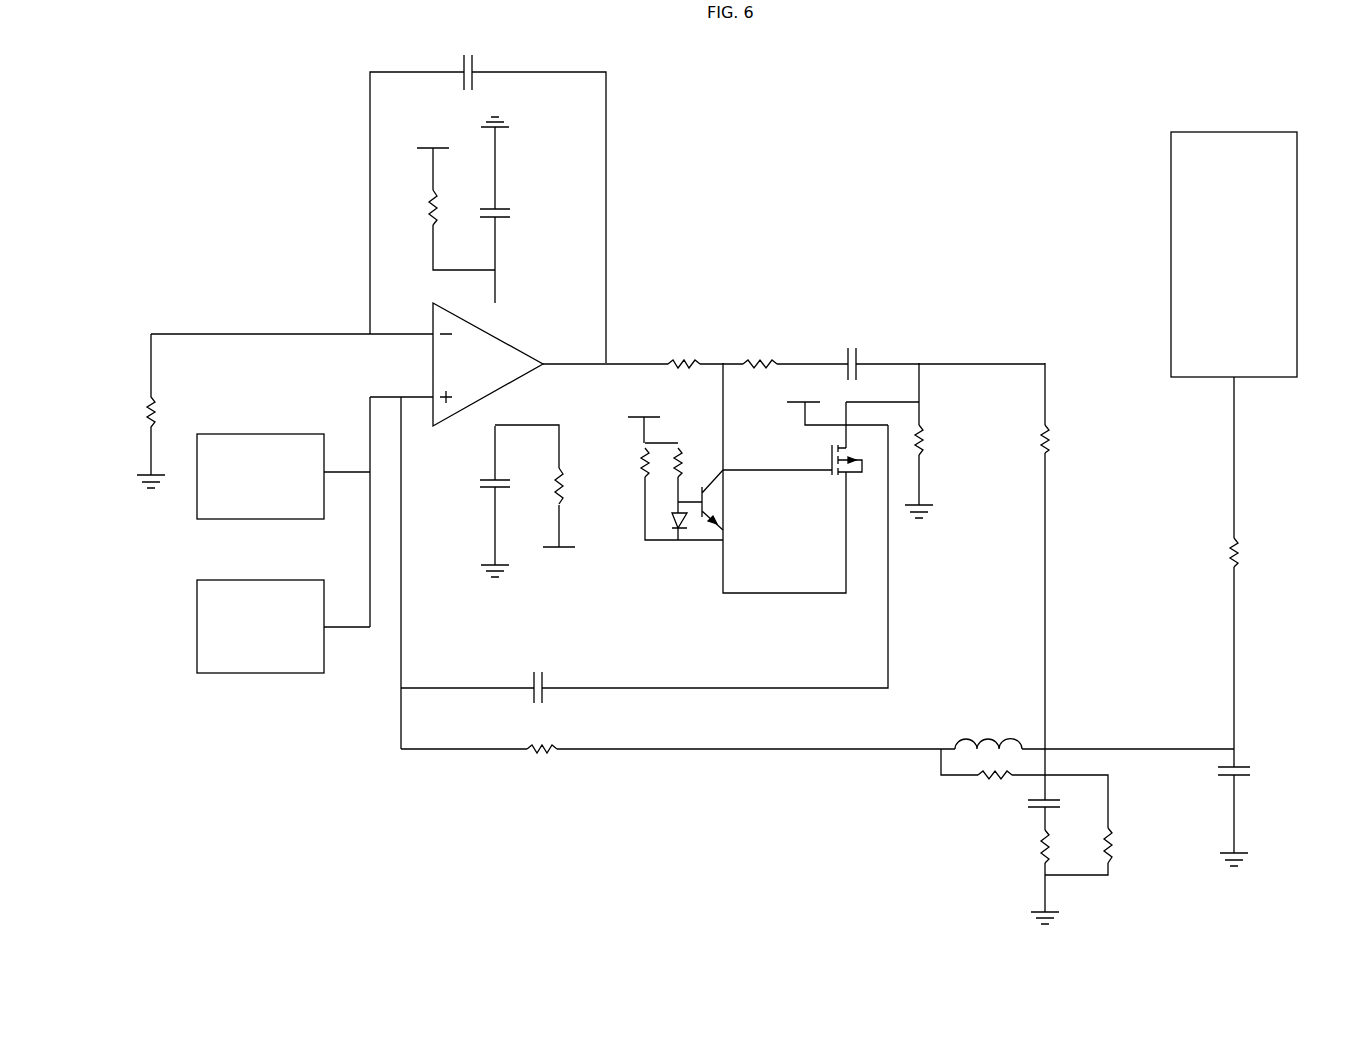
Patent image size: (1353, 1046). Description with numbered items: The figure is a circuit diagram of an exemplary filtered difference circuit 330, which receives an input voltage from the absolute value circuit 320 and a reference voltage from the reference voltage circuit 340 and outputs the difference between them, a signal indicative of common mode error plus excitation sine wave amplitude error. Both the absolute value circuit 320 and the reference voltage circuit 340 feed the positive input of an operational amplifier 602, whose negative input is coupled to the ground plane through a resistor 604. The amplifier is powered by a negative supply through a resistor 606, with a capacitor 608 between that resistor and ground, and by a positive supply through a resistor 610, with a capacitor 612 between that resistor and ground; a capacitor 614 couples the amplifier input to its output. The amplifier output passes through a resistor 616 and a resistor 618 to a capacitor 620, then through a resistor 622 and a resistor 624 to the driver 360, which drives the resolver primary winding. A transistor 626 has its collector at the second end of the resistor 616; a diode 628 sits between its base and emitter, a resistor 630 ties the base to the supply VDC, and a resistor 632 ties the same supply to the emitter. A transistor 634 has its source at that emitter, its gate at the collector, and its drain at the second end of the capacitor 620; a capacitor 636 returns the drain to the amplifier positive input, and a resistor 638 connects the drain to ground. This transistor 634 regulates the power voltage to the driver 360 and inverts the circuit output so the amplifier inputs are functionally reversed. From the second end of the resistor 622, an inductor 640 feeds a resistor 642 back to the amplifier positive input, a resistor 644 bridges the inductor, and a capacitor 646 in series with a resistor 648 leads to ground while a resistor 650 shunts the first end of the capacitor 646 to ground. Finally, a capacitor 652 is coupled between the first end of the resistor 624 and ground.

The filtered difference circuit 330 is at (887, 103).
The absolute value circuit 320 is at (258, 434).
The reference voltage circuit 340 is at (258, 580).
The driver 360 is at (1238, 132).
The operational amplifier 602 is at (511, 348).
The resistor 604 is at (147, 412).
The resistor 606 is at (430, 212).
The capacitor 608 is at (500, 219).
The resistor 610 is at (566, 490).
The capacitor 612 is at (489, 489).
The capacitor 614 is at (473, 70).
The resistor 616 is at (679, 357).
The resistor 618 is at (757, 357).
The capacitor 620 is at (858, 362).
The resistor 622 is at (1048, 452).
The resistor 624 is at (1232, 543).
The transistor 626 is at (705, 497).
The diode 628 is at (671, 525).
The resistor 630 is at (683, 462).
The resistor 632 is at (641, 462).
The transistor 634 is at (830, 462).
The capacitor 636 is at (542, 680).
The resistor 638 is at (922, 447).
The inductor 640 is at (978, 740).
The resistor 642 is at (550, 758).
The resistor 644 is at (991, 781).
The capacitor 646 is at (1040, 812).
The resistor 648 is at (1040, 848).
The resistor 650 is at (1110, 860).
The capacitor 652 is at (1245, 777).